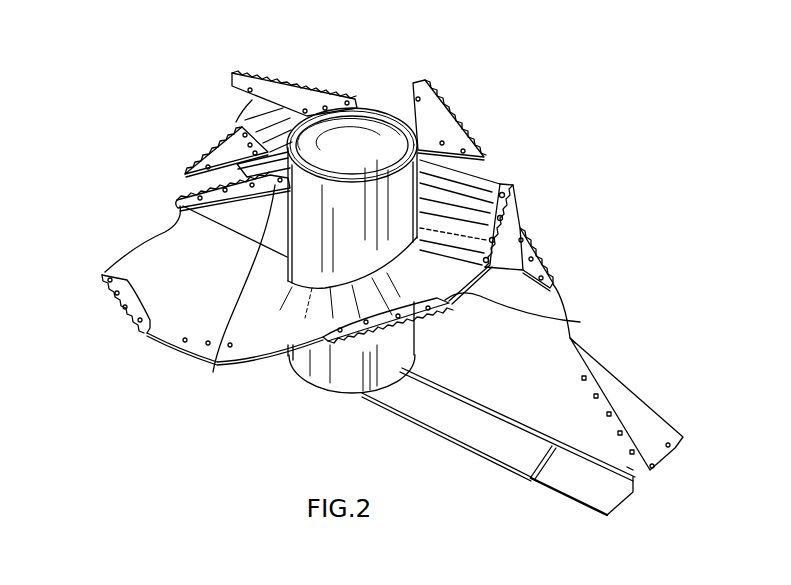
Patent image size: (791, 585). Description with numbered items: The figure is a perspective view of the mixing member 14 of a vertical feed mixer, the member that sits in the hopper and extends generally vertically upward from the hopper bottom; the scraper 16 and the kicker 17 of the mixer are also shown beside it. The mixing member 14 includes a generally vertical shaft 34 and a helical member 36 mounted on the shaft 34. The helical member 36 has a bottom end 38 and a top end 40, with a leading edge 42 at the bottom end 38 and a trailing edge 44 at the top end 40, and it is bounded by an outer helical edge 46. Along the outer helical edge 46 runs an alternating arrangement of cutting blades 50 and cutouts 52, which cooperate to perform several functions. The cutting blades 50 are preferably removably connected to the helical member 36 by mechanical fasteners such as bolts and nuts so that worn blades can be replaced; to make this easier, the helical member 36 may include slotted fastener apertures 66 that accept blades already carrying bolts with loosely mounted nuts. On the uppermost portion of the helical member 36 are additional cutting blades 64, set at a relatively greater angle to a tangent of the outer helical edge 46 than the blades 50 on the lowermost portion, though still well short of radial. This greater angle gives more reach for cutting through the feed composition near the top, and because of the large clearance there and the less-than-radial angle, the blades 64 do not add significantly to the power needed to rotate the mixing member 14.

The mixing member 14 is at (512, 78).
The scraper 16 is at (553, 477).
The kicker 17 is at (655, 430).
The shaft 34 is at (405, 177).
The helical member 36 is at (465, 183).
The bottom end 38 is at (447, 380).
The top end 40 is at (248, 123).
The leading edge 42 is at (492, 397).
The trailing edge 44 is at (213, 372).
The outer helical edge 46 is at (150, 342).
The cutting blades 50 is at (178, 198).
The cutouts 52 is at (150, 243).
The cutting blades 64 is at (283, 88).
The slotted fastener apertures 66 is at (502, 195).